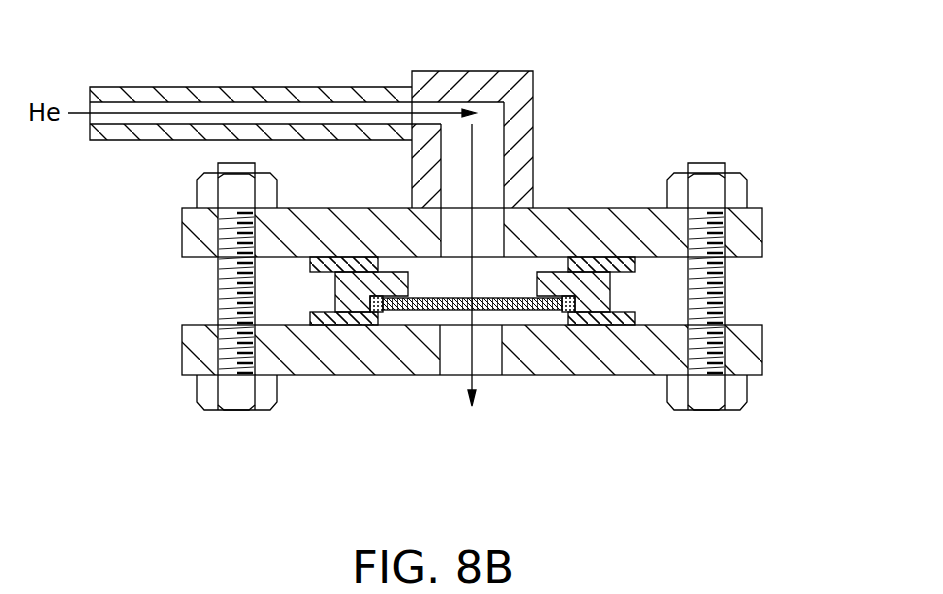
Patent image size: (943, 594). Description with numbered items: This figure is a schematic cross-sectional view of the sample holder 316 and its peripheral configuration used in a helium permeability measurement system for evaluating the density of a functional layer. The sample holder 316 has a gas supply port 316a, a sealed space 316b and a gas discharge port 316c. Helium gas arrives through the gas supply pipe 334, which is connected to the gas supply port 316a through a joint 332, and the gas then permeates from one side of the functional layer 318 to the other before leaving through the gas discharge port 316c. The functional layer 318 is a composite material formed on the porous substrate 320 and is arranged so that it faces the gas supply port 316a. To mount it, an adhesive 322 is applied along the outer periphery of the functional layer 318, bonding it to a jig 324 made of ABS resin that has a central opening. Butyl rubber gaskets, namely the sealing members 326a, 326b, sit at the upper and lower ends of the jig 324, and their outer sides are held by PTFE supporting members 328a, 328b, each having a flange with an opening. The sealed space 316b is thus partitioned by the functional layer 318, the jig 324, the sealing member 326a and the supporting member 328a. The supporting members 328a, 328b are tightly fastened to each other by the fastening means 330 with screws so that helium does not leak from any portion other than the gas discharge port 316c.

The sample holder 316 is at (687, 80).
The gas supply port 316a is at (505, 242).
The sealed space 316b is at (440, 284).
The gas discharge port 316c is at (435, 368).
The functional layer 318 is at (510, 298).
The porous substrate 320 is at (524, 310).
The adhesive 322 is at (568, 314).
The jig 324 is at (593, 293).
The sealing member 326a is at (637, 266).
The sealing member 326b is at (637, 318).
The supporting member 328a is at (752, 229).
The supporting member 328b is at (752, 348).
The fastening means 330 is at (707, 411).
The joint 332 is at (456, 78).
The gas supply pipe 334 is at (276, 94).